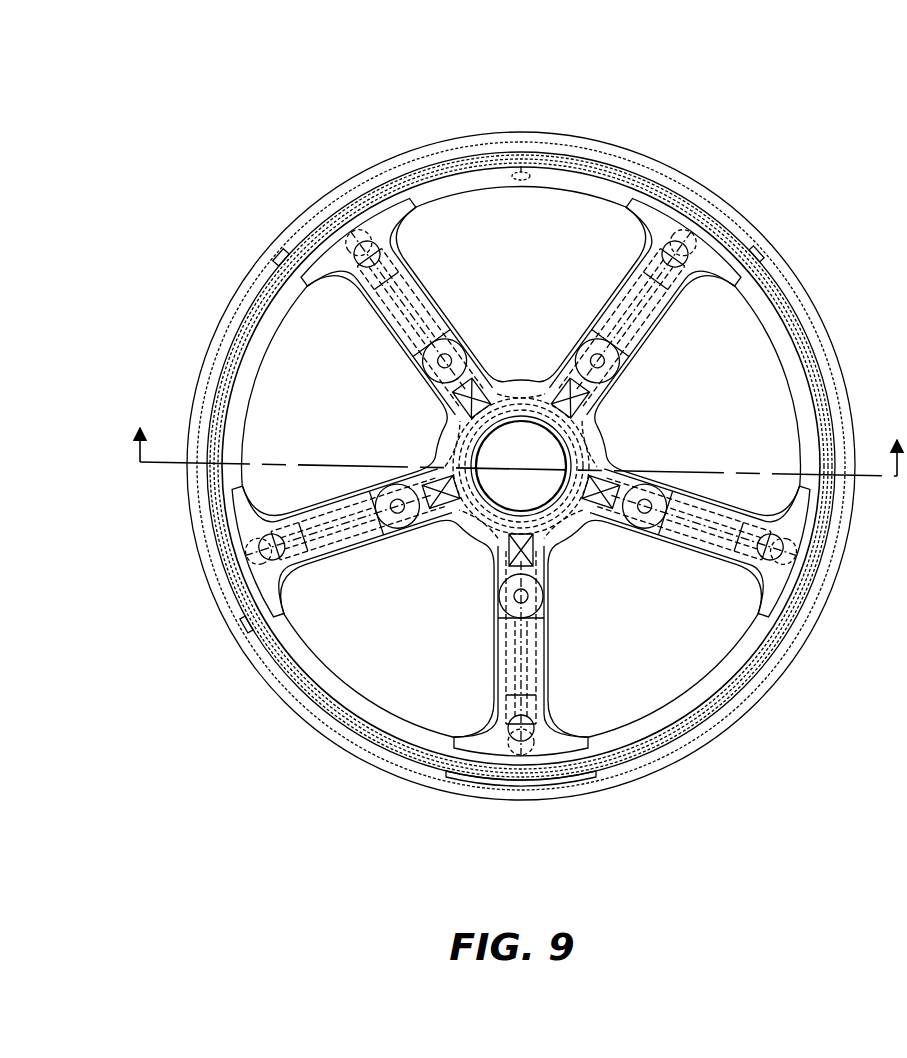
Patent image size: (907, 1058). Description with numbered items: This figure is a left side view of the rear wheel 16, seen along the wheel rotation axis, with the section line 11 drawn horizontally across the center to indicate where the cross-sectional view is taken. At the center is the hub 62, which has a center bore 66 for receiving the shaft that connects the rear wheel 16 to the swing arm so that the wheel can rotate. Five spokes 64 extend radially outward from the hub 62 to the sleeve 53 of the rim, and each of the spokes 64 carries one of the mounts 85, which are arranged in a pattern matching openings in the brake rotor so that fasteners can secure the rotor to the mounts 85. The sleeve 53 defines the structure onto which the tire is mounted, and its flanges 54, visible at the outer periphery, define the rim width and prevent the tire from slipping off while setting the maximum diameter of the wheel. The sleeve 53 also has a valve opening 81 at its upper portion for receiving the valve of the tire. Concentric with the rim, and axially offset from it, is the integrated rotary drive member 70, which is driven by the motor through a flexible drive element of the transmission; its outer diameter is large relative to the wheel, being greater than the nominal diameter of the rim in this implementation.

The section line 11- 11 is at (516, 434).
The rear wheel 16 is at (240, 168).
The sleeve 53 is at (433, 192).
The flanges 54 is at (580, 133).
The hub 62 is at (603, 446).
The spokes 64 is at (600, 322).
The center bore 66 is at (490, 452).
The rotary drive member 70 is at (624, 172).
The valve opening 81 is at (516, 170).
The mounts 85 is at (607, 378).